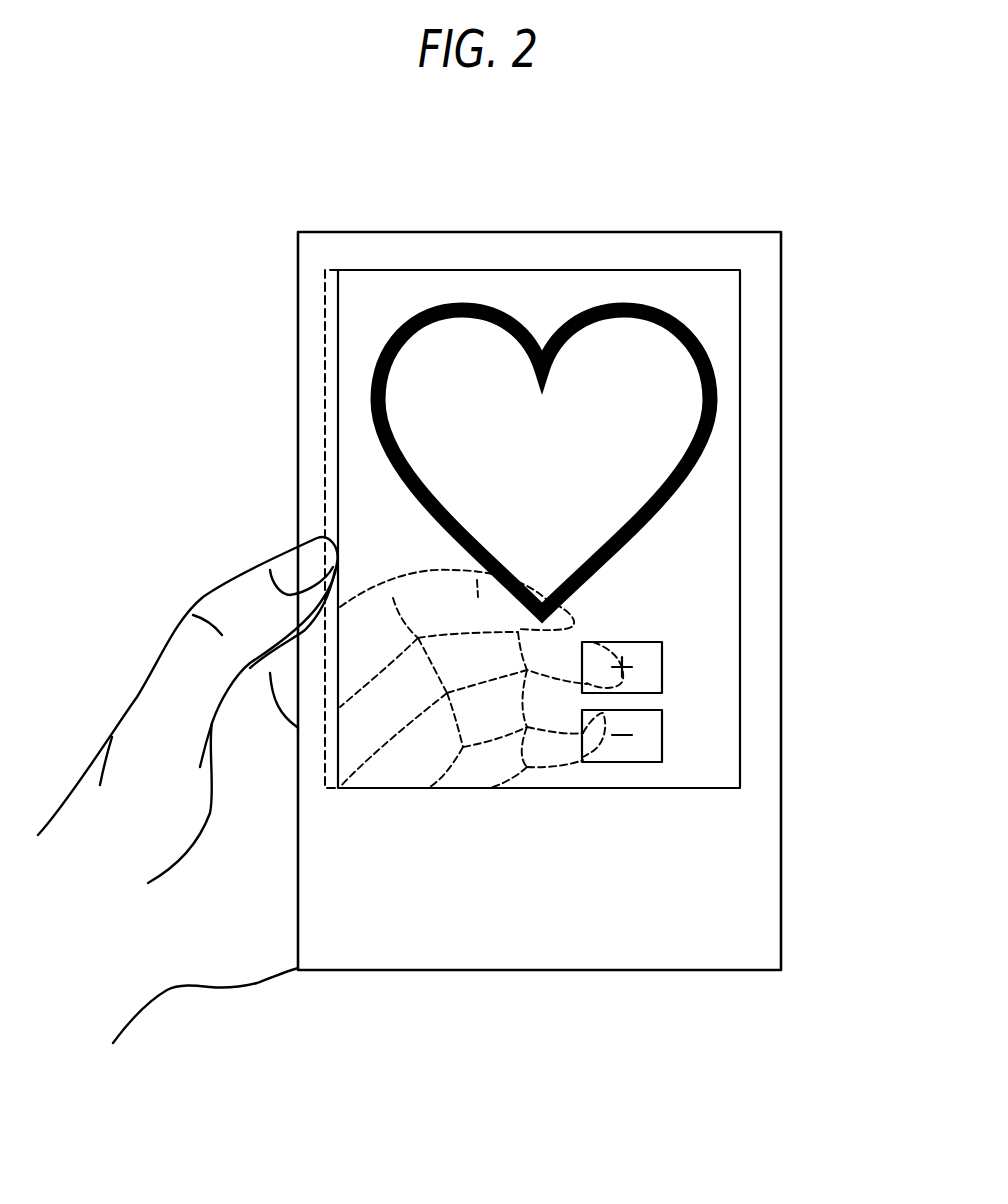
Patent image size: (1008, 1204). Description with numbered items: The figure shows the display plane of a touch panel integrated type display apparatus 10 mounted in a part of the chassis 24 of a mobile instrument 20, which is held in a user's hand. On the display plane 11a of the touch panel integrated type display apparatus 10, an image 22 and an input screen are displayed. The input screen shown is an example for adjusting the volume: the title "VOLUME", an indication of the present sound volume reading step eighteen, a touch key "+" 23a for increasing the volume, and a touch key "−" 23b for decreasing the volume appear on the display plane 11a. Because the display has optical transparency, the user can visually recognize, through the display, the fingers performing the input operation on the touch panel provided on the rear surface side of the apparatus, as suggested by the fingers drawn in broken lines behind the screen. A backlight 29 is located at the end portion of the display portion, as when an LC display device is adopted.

The mobile instrument 20 is at (658, 193).
The touch panel integrated type display apparatus 10 is at (509, 292).
The display plane 11a is at (713, 312).
The image 22 is at (668, 366).
The touch key "+" 23a is at (650, 666).
The touch key "−" 23b is at (650, 735).
The chassis 24 is at (740, 872).
The backlight 29 is at (325, 351).